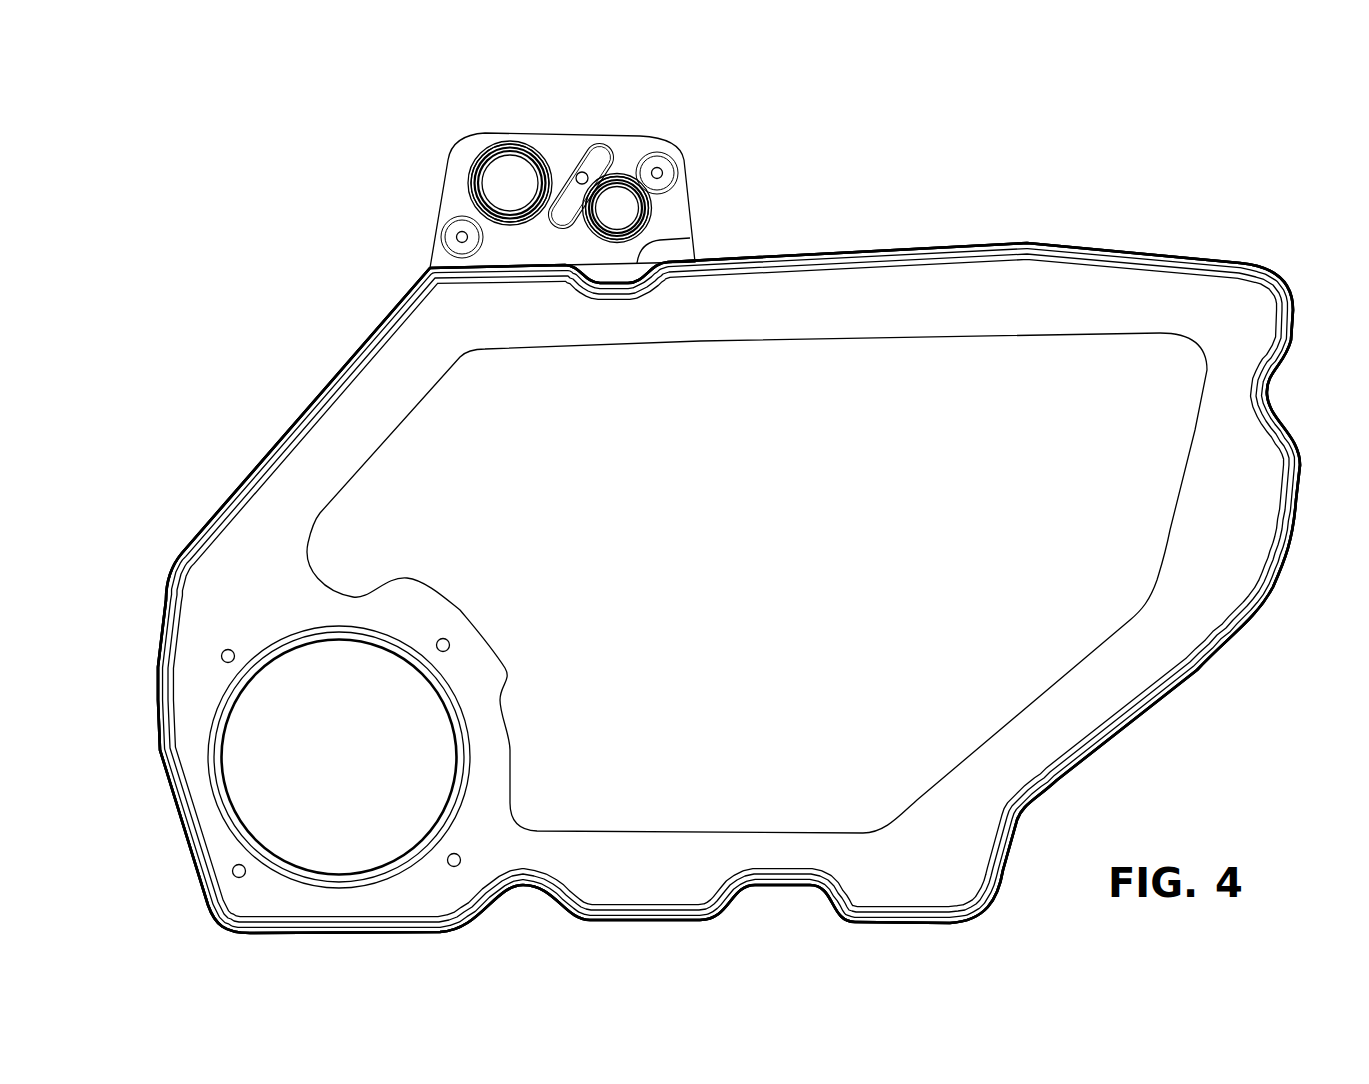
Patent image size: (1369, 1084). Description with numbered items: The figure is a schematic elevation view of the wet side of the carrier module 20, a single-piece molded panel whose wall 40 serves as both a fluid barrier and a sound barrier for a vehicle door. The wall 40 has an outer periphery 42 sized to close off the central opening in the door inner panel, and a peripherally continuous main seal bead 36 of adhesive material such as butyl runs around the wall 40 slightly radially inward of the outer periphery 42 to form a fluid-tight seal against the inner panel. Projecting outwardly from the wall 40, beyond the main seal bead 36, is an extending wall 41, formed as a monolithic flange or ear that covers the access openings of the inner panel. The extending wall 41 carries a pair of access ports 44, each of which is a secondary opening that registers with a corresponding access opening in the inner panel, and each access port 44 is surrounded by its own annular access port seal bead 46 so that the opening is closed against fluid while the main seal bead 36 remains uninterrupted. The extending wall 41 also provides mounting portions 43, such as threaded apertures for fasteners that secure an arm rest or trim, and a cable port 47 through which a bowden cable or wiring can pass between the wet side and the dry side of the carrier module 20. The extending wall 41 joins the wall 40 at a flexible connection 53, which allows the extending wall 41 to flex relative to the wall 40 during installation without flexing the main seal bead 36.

The carrier module 20 is at (233, 470).
The main seal bead 36 is at (885, 258).
The wall 40 is at (203, 680).
The extending wall 41 is at (467, 138).
The outer periphery 42 is at (340, 363).
The mounting portions 43 is at (658, 172).
The access port 44 is at (505, 181).
The access port seal bead 46 is at (473, 193).
The cable port 47 is at (572, 178).
The flexible connection 53 is at (690, 238).